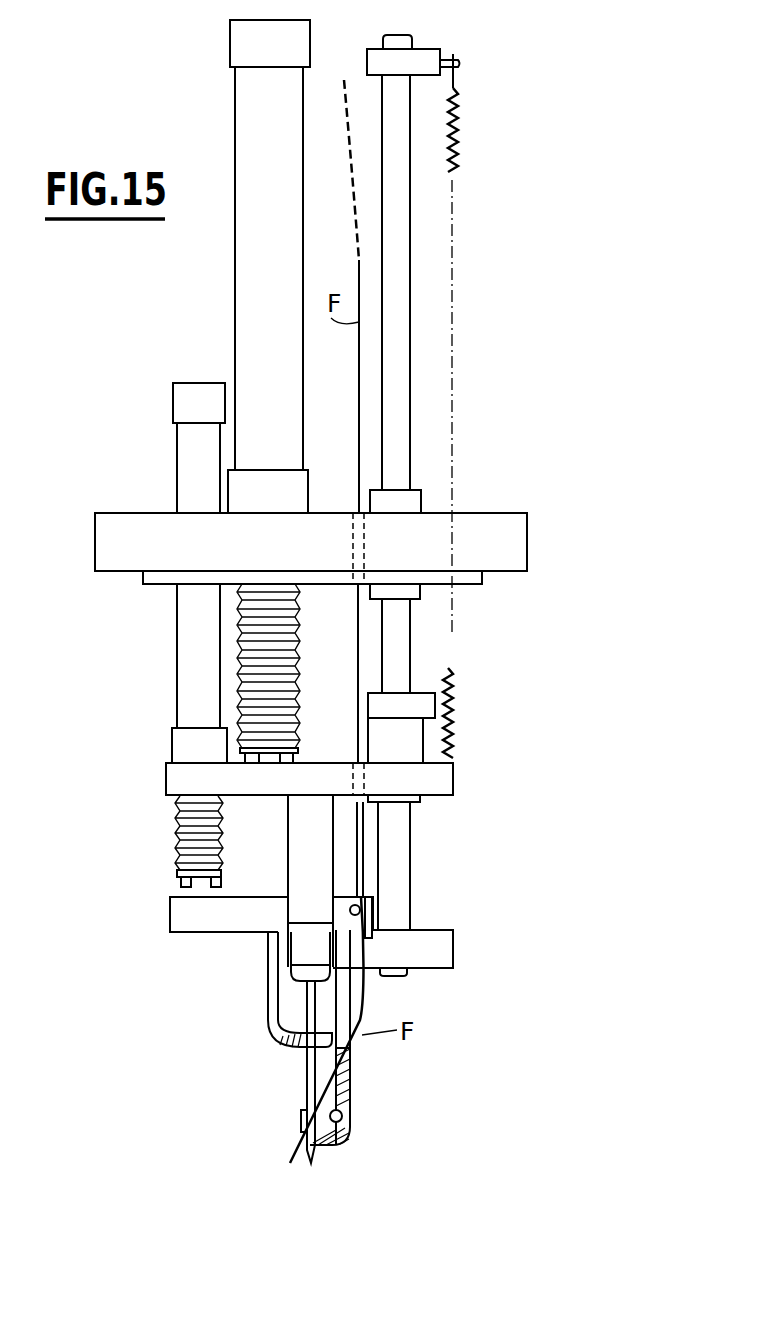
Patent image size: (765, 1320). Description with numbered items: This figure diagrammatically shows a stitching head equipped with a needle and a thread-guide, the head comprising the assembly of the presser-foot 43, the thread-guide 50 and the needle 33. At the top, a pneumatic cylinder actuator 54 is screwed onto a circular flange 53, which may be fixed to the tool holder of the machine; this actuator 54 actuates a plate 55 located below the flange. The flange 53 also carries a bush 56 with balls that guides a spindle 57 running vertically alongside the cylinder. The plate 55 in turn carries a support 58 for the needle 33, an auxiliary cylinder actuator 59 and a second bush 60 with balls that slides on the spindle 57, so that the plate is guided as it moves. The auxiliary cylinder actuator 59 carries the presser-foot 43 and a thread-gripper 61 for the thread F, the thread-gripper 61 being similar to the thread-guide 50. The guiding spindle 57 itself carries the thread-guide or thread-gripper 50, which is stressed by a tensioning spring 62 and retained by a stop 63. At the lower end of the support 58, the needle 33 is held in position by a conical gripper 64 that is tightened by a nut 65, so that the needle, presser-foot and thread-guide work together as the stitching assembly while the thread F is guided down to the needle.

The needle 33 is at (305, 1086).
The presser-foot 43 is at (275, 1012).
The thread-guide 50 is at (355, 1135).
The circular flange 53 is at (513, 553).
The pneumatic cylinder actuator 54 is at (255, 312).
The plate 55 is at (172, 772).
The bush 56 is at (408, 503).
The spindle 57 is at (401, 352).
The support 58 is at (300, 833).
The auxiliary cylinder actuator 59 is at (182, 677).
The second bush 60 is at (407, 748).
The thread-gripper 61 is at (370, 908).
The tensioning spring 62 is at (457, 130).
The stop 63 is at (420, 700).
The conical gripper 64 is at (297, 970).
The nut 65 is at (297, 945).